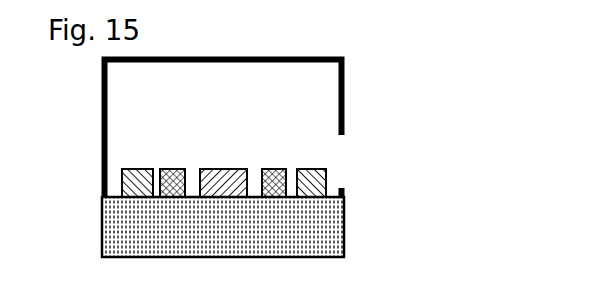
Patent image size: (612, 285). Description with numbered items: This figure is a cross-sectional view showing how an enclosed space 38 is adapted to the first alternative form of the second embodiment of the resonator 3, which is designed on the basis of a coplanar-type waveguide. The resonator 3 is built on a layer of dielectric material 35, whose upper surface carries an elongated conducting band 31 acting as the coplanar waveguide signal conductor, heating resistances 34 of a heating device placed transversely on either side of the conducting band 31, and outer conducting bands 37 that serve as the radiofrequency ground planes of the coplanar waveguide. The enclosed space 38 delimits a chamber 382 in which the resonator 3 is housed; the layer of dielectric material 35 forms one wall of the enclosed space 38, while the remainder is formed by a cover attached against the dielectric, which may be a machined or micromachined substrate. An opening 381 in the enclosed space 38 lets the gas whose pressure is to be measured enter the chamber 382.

The resonator 3 is at (353, 118).
The conducting band 31 is at (225, 168).
The heating resistances 34 is at (176, 168).
The layer of dielectric material 35 is at (345, 227).
The conducting bands 37 is at (138, 168).
The enclosed space 38 is at (222, 57).
The opening 381 is at (348, 161).
The chamber 382 is at (212, 100).